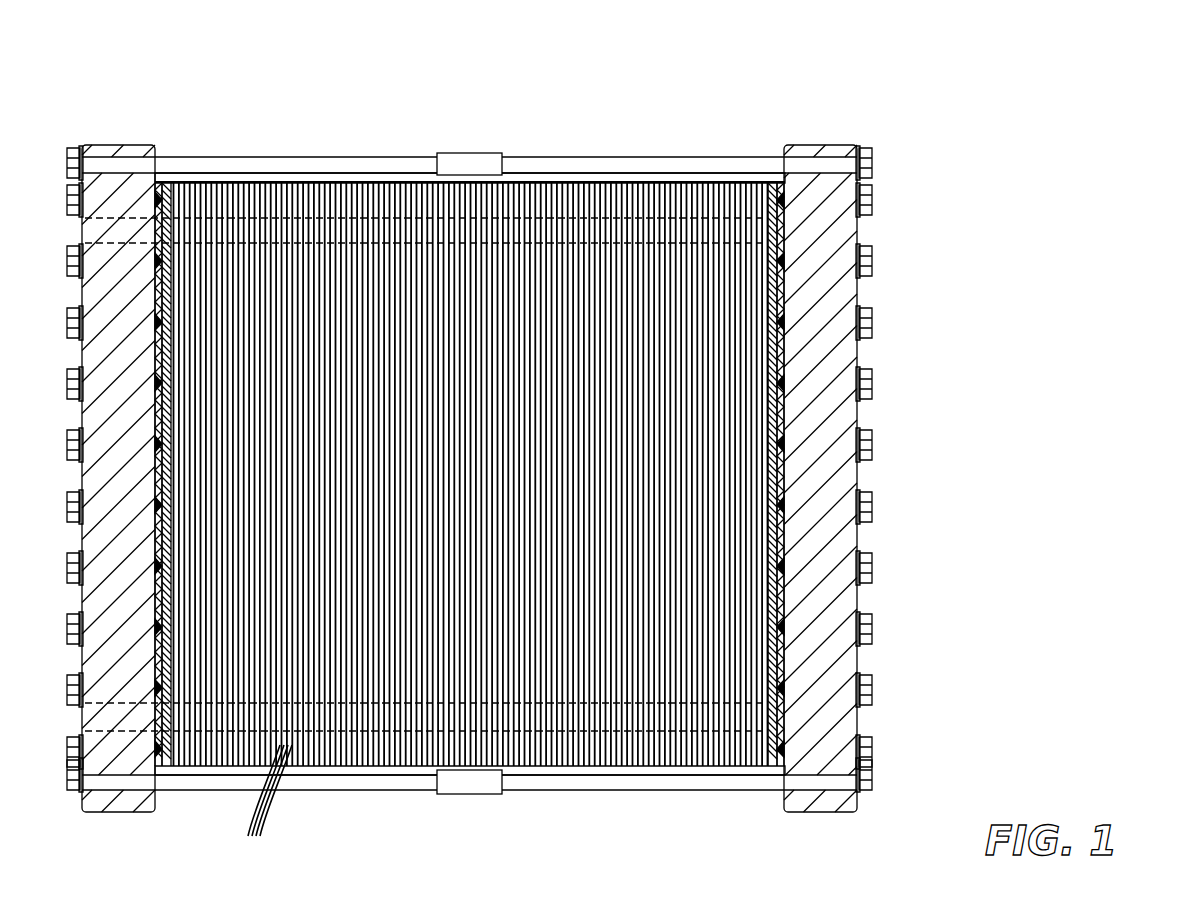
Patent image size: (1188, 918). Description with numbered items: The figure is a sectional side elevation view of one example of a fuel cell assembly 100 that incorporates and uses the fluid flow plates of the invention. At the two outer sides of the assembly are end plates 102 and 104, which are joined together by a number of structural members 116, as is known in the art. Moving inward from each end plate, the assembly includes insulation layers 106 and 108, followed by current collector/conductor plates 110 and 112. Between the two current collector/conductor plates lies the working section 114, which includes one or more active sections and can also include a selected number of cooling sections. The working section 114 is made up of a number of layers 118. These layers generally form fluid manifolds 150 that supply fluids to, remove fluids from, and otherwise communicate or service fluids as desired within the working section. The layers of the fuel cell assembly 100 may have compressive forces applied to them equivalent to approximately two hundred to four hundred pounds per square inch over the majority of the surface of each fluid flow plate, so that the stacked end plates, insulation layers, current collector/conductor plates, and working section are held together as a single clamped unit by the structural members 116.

The fuel cell assembly 100 is at (550, 28).
The end plate 102 is at (96, 150).
The end plate 104 is at (838, 150).
The insulation layer 106 is at (160, 183).
The insulation layer 108 is at (776, 183).
The current collector/conductor plate 110 is at (167, 183).
The current collector/conductor plate 112 is at (770, 183).
The working section 114 is at (562, 157).
The structural member 116 is at (405, 157).
The layers 118 is at (263, 806).
The fluid manifold 150 is at (316, 222).